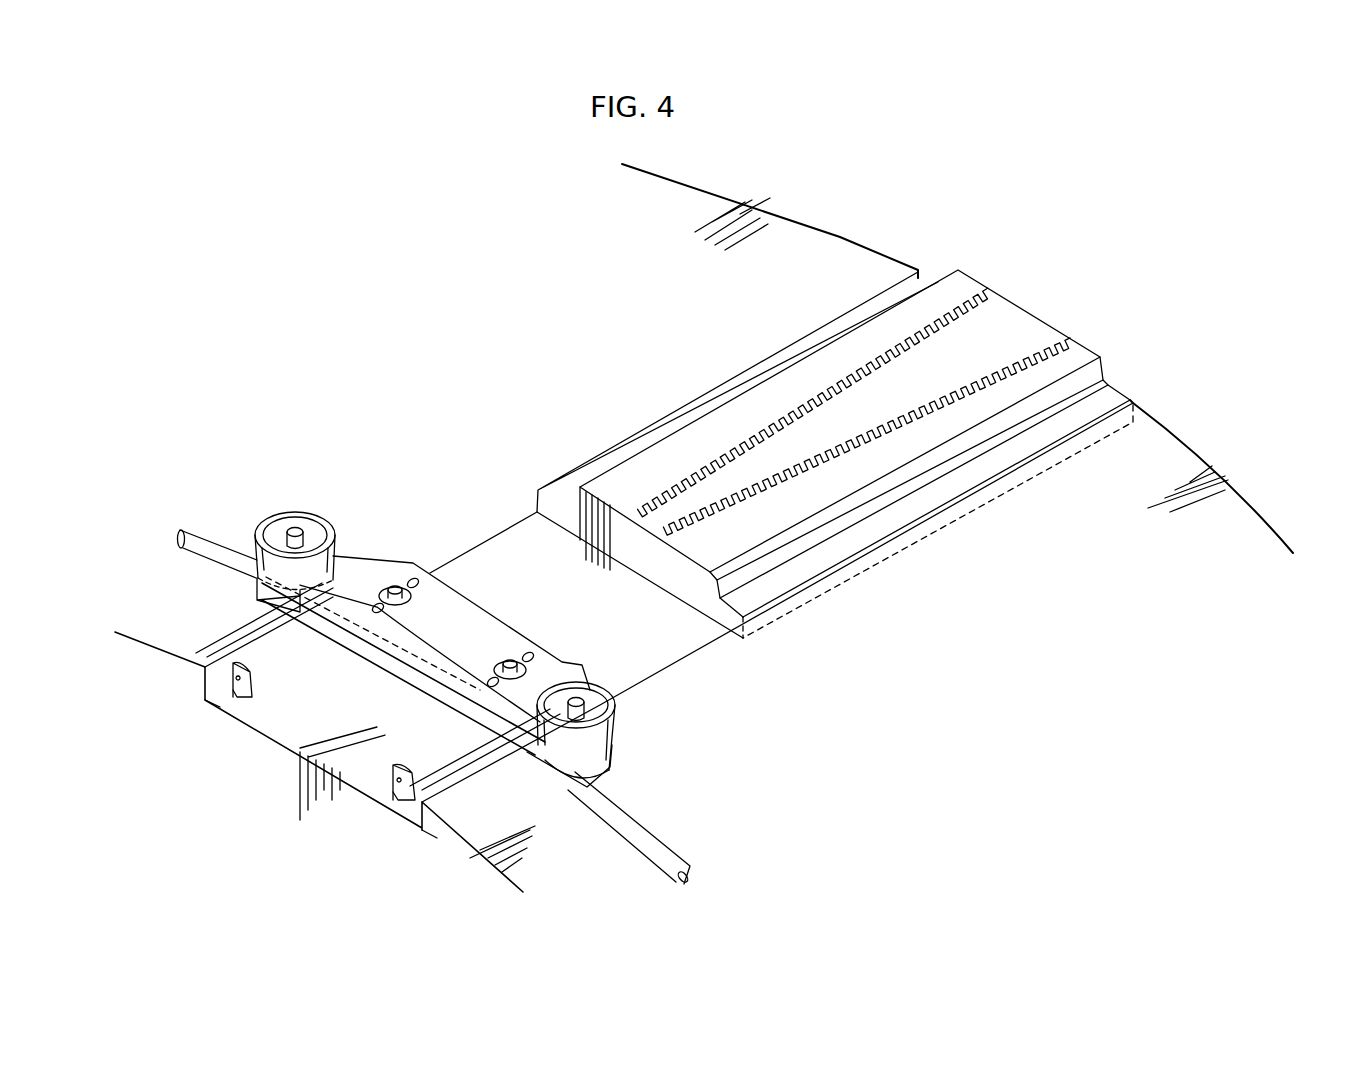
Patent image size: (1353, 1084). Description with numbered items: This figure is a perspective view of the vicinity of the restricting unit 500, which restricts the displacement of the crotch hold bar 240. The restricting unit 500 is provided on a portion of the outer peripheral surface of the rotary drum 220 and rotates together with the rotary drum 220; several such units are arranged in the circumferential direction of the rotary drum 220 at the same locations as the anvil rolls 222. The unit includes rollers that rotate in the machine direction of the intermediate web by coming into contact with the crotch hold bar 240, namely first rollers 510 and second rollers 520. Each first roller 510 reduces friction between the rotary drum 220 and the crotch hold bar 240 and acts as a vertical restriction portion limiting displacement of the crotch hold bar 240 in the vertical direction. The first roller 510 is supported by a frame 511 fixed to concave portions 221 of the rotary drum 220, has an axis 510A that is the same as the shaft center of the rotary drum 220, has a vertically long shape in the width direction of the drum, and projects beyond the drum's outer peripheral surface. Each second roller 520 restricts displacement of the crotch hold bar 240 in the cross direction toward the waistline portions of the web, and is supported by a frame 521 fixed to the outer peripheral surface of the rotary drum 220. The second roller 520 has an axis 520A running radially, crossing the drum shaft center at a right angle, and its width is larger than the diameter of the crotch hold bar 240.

The rotary drum 220 is at (783, 230).
The concave portion 221 is at (307, 737).
The anvil roll 222 is at (1022, 332).
The crotch hold bar 240 is at (225, 557).
The restricting unit 500 is at (555, 283).
The first roller 510 is at (285, 652).
The axis 510A is at (233, 674).
The frame 511 is at (213, 702).
The second roller 520 is at (338, 555).
The axis 520A is at (297, 531).
The frame 521 is at (367, 566).